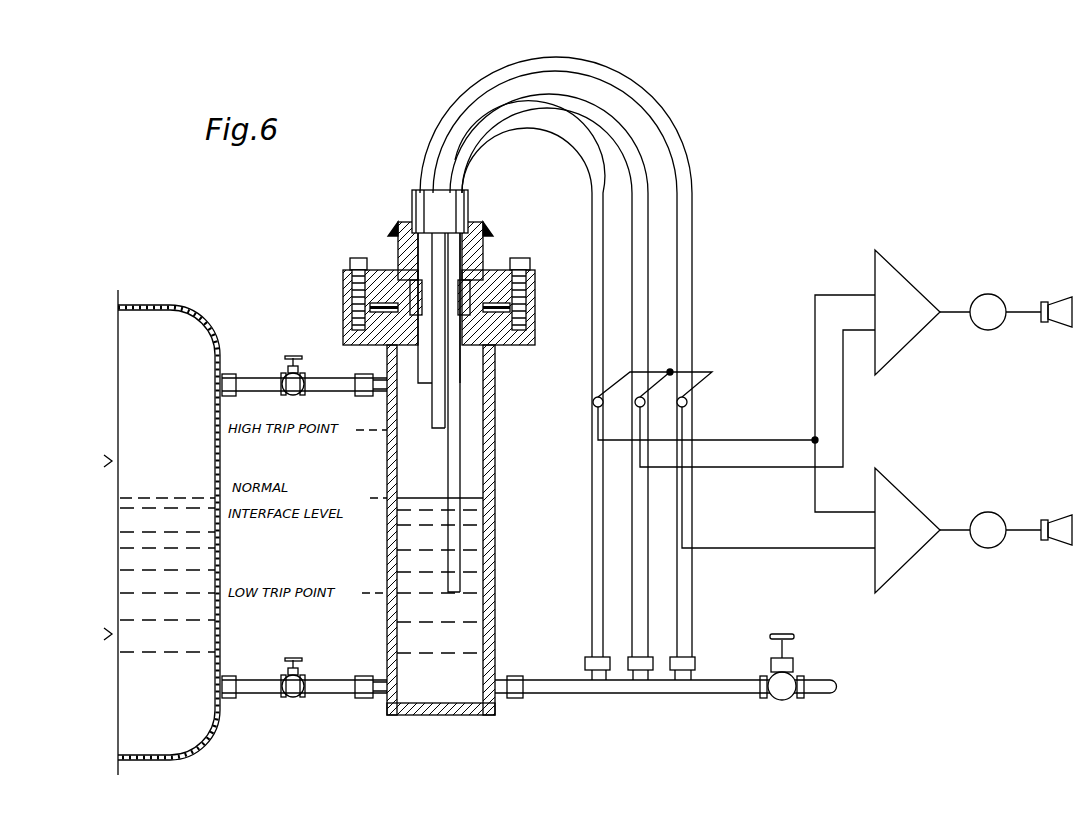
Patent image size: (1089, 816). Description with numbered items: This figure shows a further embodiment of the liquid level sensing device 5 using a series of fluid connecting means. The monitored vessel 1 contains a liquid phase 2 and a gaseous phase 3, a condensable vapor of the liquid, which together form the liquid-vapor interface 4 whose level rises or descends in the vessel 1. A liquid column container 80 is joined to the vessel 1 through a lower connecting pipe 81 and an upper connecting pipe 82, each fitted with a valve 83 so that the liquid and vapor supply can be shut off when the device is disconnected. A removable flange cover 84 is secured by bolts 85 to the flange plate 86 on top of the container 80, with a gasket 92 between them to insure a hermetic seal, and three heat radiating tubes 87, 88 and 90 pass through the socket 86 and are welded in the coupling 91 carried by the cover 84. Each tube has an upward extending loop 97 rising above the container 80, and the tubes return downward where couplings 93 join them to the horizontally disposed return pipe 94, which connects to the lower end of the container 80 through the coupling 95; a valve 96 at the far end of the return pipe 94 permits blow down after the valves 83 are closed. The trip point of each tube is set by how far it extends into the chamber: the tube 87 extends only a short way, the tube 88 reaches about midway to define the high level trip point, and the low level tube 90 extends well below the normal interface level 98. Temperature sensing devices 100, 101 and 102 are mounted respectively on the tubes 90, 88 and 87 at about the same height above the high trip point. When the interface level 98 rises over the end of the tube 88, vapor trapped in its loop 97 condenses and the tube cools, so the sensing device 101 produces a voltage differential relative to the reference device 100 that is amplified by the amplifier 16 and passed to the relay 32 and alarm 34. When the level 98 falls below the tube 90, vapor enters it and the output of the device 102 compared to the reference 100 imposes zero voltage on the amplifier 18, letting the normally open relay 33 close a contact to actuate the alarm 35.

The vessel 1 is at (176, 282).
The liquid phase 2 is at (150, 646).
The gaseous phase 3 is at (164, 444).
The liquid-vapor interface 4 is at (209, 498).
The liquid level sensing device 5 is at (400, 204).
The amplifier 16 is at (908, 342).
The amplifier 18 is at (908, 562).
The relay 32 is at (996, 294).
The normally open relay 33 is at (994, 514).
The alarm horn 34 is at (1070, 328).
The alarm 35 is at (1066, 548).
The liquid column container 80 is at (387, 546).
The lower connecting pipe 81 is at (266, 671).
The upper connecting pipe 82 is at (266, 376).
The valve 83 is at (296, 357).
The flange cover 84 is at (372, 274).
The bolts 85 is at (350, 260).
The flange plate 86 is at (483, 250).
The heat radiating tube 87 is at (420, 158).
The heat radiating tube 88 is at (433, 180).
The heat radiating tube 90 is at (462, 172).
The coupling 91 is at (468, 194).
The gasket 92 is at (510, 302).
The couplings 93 is at (668, 672).
The return pipe 94 is at (684, 694).
The coupling 95 is at (510, 678).
The valve 96 is at (776, 696).
The upward extending loop 97 is at (522, 110).
The normal liquid-vapor interface level 98 is at (400, 496).
The temperature sensing device 100 is at (596, 400).
The temperature sensing device 101 is at (645, 408).
The temperature sensing device 102 is at (688, 406).